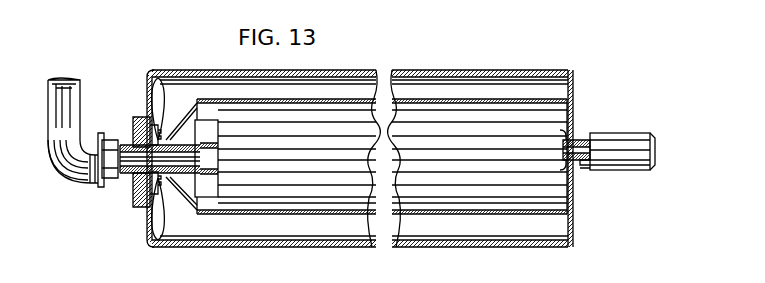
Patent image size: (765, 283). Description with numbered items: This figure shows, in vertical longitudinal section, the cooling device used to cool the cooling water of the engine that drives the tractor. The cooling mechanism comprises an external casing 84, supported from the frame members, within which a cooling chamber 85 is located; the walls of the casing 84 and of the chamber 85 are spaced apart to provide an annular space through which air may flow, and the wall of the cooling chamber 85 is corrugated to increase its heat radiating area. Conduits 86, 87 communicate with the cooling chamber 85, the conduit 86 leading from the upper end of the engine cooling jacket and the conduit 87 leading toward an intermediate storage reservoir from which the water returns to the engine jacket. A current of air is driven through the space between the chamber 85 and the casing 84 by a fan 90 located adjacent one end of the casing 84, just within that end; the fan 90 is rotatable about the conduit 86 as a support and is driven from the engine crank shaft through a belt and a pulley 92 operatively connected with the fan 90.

The external casing 84 is at (460, 72).
The cooling chamber 85 is at (446, 99).
The conduit 86 is at (126, 182).
The conduit 87 is at (624, 142).
The fan 90 is at (155, 95).
The pulley 92 is at (135, 121).